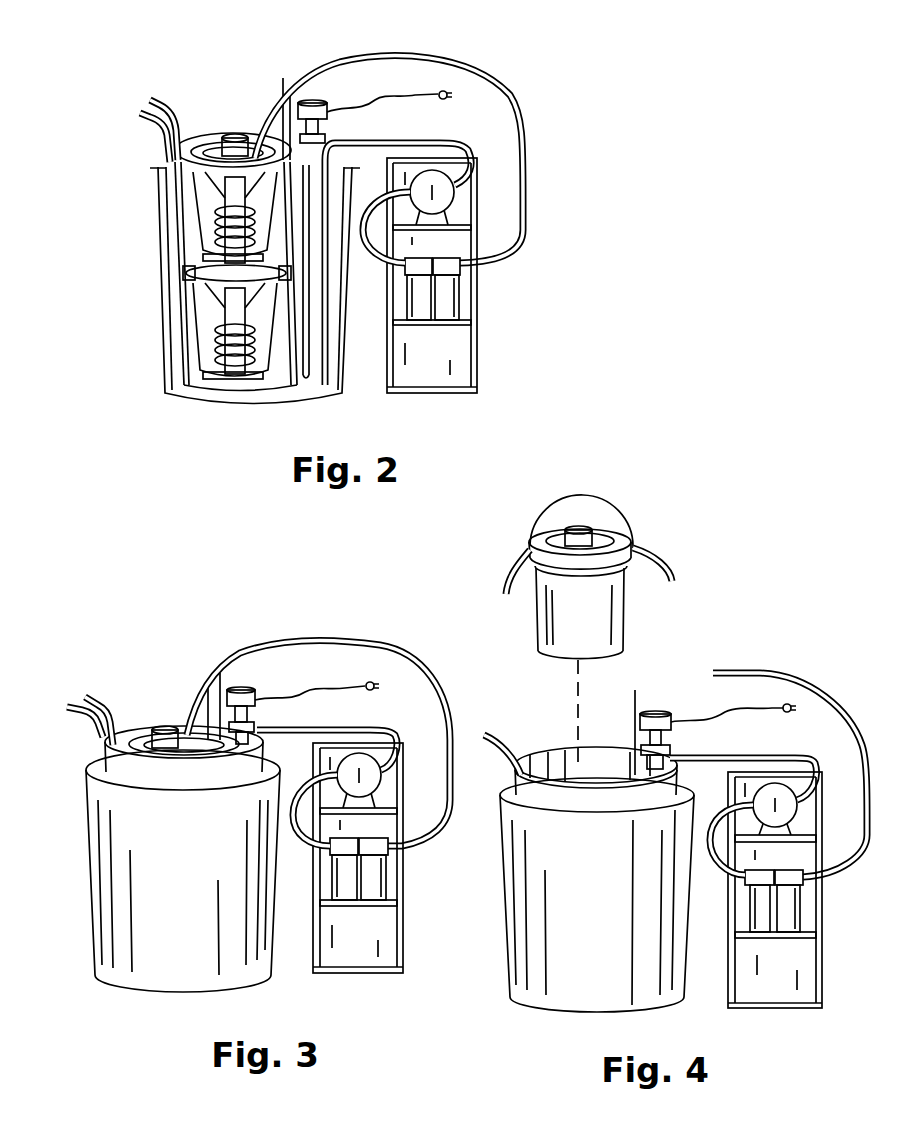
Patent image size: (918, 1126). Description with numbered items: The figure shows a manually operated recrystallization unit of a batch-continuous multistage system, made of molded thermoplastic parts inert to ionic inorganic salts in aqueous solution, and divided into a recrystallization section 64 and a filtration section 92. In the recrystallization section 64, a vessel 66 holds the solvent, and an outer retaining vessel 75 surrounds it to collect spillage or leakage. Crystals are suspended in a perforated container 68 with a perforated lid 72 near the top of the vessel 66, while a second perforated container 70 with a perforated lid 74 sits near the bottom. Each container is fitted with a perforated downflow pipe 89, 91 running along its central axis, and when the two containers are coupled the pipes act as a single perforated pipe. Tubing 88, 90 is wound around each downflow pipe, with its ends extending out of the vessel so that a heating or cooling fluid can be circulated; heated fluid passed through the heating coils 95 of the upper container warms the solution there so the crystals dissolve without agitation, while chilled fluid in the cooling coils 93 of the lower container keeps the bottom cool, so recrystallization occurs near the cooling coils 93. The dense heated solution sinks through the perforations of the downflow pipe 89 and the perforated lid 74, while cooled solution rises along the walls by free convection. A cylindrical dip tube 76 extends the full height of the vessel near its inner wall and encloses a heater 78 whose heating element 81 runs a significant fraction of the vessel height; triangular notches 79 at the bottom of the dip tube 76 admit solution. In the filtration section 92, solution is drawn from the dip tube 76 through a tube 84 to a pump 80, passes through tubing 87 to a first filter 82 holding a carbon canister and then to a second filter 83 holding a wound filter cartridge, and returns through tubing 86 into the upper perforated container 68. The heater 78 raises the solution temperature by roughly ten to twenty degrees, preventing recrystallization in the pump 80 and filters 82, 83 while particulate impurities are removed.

In FIG. 2, the recrystallization section 64 is at (235, 416).
In FIG. 3, the recrystallization section 64 is at (132, 1002).
In FIG. 4, the recrystallization section 64 is at (545, 1030).
In FIG. 2, the vessel 66 is at (237, 133).
In FIG. 3, the vessel 66 is at (148, 777).
In FIG. 4, the vessel 66 is at (612, 756).
In FIG. 2, the perforated container 68 is at (213, 257).
In FIG. 4, the perforated container 68 is at (537, 622).
In FIG. 2, the second perforated container 70 is at (187, 367).
In FIG. 2, the perforated lid 72 is at (200, 157).
In FIG. 3, the perforated lid 72 is at (127, 730).
In FIG. 4, the perforated lid 72 is at (563, 530).
In FIG. 2, the perforated lid 74 is at (190, 262).
In FIG. 2, the outer retaining vessel 75 is at (167, 340).
In FIG. 3, the outer retaining vessel 75 is at (113, 922).
In FIG. 4, the outer retaining vessel 75 is at (505, 952).
In FIG. 2, the cylindrical dip tube 76 is at (290, 373).
In FIG. 2, the heater 78 is at (317, 103).
In FIG. 3, the heater 78 is at (247, 690).
In FIG. 4, the heater 78 is at (657, 714).
In FIG. 2, the triangular notches 79 is at (303, 377).
In FIG. 2, the pump 80 is at (432, 180).
In FIG. 3, the pump 80 is at (360, 758).
In FIG. 4, the pump 80 is at (775, 787).
In FIG. 2, the heating element 81 is at (336, 145).
In FIG. 2, the first filter 82 is at (417, 310).
In FIG. 3, the first filter 82 is at (345, 892).
In FIG. 4, the first filter 82 is at (760, 923).
In FIG. 2, the second filter 83 is at (452, 292).
In FIG. 3, the second filter 83 is at (377, 875).
In FIG. 4, the second filter 83 is at (797, 912).
In FIG. 2, the tube 84 is at (470, 148).
In FIG. 3, the tube 84 is at (395, 733).
In FIG. 4, the tube 84 is at (813, 752).
In FIG. 2, the tubing 86 is at (310, 72).
In FIG. 3, the tubing 86 is at (240, 660).
In FIG. 4, the tubing 86 is at (790, 775).
In FIG. 2, the tubing 87 is at (372, 253).
In FIG. 3, the tubing 87 is at (300, 843).
In FIG. 4, the tubing 87 is at (715, 870).
In FIG. 2, the tubing 88 is at (170, 117).
In FIG. 3, the tubing 88 is at (102, 707).
In FIG. 4, the tubing 88 is at (512, 572).
In FIG. 2, the perforated downflow pipe 89 is at (230, 180).
In FIG. 2, the tubing 90 is at (167, 137).
In FIG. 3, the tubing 90 is at (92, 717).
In FIG. 4, the tubing 90 is at (505, 752).
In FIG. 2, the perforated downflow pipe 91 is at (230, 297).
In FIG. 2, the filtration section 92 is at (432, 275).
In FIG. 3, the filtration section 92 is at (370, 990).
In FIG. 4, the filtration section 92 is at (787, 1030).
In FIG. 2, the cooling coils 93 is at (263, 367).
In FIG. 2, the heating coils 95 is at (222, 233).